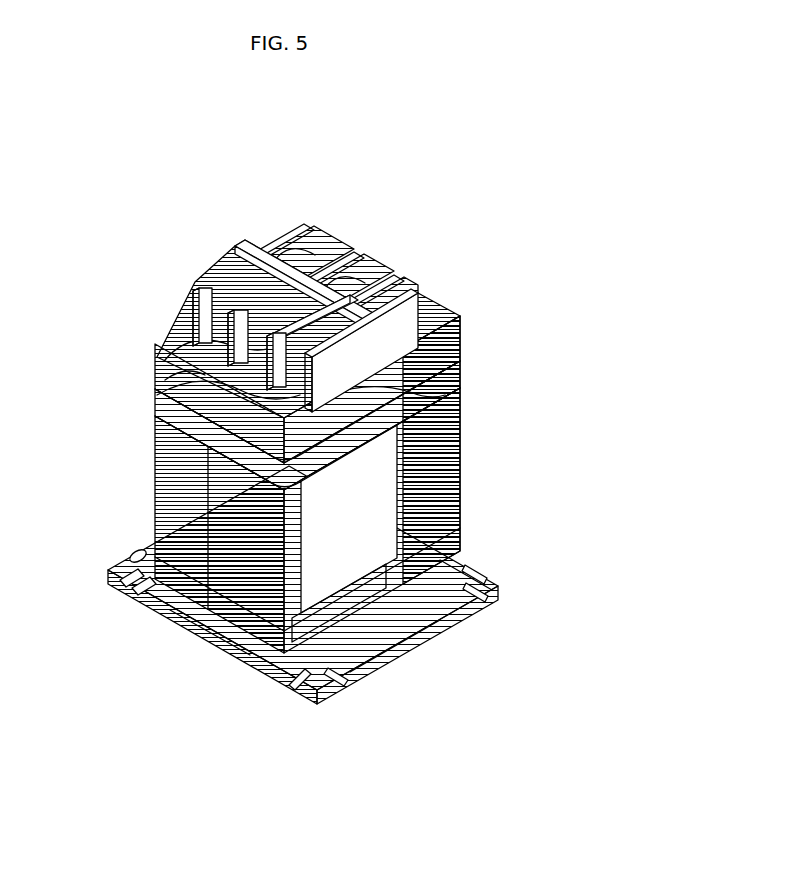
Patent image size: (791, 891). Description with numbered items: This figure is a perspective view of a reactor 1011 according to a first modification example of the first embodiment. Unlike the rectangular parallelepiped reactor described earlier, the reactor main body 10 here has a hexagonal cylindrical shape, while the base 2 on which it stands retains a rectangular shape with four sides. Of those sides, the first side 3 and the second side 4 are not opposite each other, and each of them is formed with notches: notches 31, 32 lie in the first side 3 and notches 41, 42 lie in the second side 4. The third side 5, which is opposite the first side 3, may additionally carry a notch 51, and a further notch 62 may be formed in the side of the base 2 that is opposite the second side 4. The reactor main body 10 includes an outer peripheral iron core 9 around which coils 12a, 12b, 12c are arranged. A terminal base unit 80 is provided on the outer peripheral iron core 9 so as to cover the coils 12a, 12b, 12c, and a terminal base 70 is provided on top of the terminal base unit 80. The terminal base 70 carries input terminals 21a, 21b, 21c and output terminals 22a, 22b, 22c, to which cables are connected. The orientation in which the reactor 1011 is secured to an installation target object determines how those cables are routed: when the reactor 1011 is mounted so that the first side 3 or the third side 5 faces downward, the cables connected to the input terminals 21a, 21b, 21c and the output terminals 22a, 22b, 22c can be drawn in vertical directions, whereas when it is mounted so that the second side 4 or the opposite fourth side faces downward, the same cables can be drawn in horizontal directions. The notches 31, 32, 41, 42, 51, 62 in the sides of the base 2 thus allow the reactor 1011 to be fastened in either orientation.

The reactor 1011 is at (441, 153).
The base 2 is at (370, 656).
The first side 3 is at (212, 628).
The second side 4 is at (430, 620).
The third side 5 is at (460, 560).
The notch 31 is at (128, 584).
The notch 32 is at (292, 684).
The notch 41 is at (336, 680).
The notch 42 is at (488, 592).
The notch 51 is at (486, 572).
The notch 62 is at (133, 554).
The outer peripheral iron core 9 is at (157, 395).
The reactor main body 10 is at (153, 460).
The coil 12a is at (375, 437).
The coil 12b is at (172, 376).
The coil 12c is at (410, 392).
The input terminal 21a is at (198, 292).
The input terminal 21b is at (232, 312).
The input terminal 21c is at (276, 335).
The output terminal 22a is at (312, 252).
The output terminal 22b is at (350, 278).
The output terminal 22c is at (388, 305).
The terminal base 70 is at (420, 298).
The terminal base unit 80 is at (460, 345).